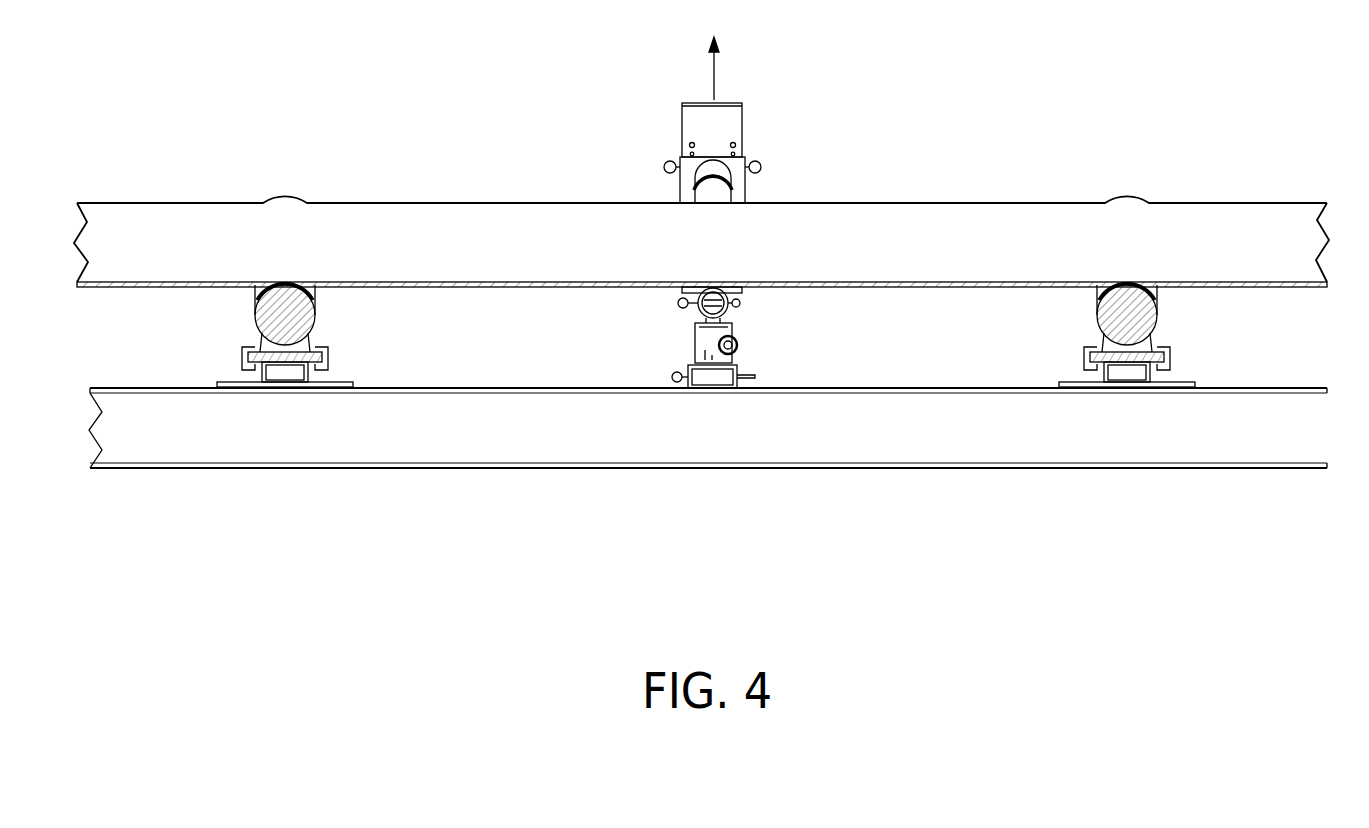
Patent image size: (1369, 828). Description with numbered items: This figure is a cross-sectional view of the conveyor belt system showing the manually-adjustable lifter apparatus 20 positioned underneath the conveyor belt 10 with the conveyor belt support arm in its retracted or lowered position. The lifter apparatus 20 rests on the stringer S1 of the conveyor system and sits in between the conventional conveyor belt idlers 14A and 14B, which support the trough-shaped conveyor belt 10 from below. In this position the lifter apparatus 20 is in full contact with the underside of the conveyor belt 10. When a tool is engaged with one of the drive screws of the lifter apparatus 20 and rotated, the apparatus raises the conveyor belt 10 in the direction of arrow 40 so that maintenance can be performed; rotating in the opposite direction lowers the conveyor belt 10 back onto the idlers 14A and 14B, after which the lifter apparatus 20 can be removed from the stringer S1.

The conveyor belt 10 is at (1050, 230).
The adjustable lifter apparatus 20 is at (795, 148).
The arrow 40 is at (714, 75).
The conveyor belt idler 14A is at (230, 331).
The conveyor belt idler 14B is at (1180, 323).
The stringer S1 is at (728, 422).